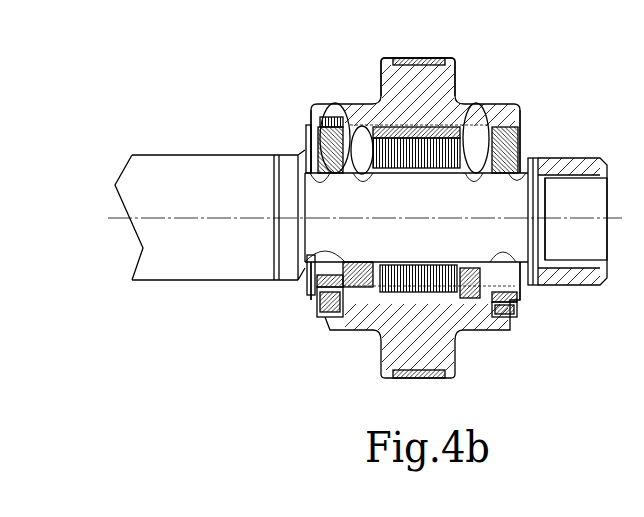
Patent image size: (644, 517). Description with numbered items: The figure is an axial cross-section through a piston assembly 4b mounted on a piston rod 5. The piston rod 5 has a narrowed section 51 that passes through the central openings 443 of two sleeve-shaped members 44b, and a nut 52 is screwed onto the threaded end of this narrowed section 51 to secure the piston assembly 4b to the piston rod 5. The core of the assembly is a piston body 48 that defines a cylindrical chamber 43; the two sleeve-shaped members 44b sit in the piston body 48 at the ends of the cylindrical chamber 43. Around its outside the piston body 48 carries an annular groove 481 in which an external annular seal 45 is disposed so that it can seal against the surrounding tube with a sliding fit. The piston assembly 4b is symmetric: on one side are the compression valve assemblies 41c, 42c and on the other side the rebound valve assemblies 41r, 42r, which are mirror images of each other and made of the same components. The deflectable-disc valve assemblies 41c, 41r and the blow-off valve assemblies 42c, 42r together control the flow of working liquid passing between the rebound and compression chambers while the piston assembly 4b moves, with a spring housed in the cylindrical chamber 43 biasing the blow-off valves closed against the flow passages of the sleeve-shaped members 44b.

The piston rod 5 is at (170, 160).
The piston assembly 4b is at (289, 123).
The compression valve assembly 41c is at (316, 112).
The rebound valve assembly 42r is at (362, 105).
The cylindrical chamber 43 is at (402, 140).
The external annular seal 45 is at (422, 58).
The compression valve assembly 42c is at (474, 103).
The rebound valve assembly 41r is at (517, 105).
The narrowed section 51 is at (566, 158).
The nut 52 is at (594, 158).
The central opening 443 is at (315, 297).
The sleeve-shaped member 44b is at (322, 318).
The annular groove 481 is at (398, 377).
The piston body 48 is at (455, 357).